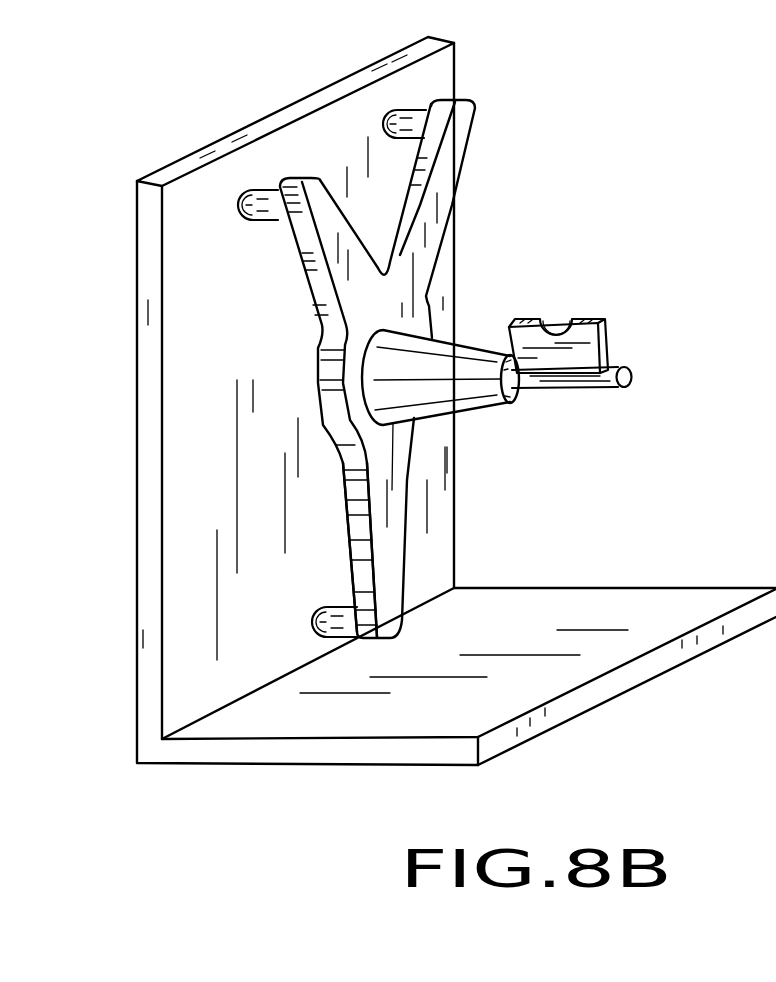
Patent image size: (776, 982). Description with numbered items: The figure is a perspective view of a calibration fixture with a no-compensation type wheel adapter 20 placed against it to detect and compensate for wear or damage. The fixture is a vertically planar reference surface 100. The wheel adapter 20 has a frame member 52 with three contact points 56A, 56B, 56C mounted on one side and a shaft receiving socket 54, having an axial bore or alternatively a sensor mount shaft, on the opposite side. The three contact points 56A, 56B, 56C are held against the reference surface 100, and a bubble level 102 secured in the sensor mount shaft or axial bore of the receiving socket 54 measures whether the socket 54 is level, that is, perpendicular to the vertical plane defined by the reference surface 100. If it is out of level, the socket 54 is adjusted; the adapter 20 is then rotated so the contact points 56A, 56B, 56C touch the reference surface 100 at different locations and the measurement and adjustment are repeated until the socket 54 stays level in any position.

The no-compensation type wheel adapter 20 is at (455, 230).
The frame member 52 is at (352, 395).
The shaft receiving socket 54 is at (481, 350).
The contact point 56A is at (408, 110).
The contact point 56B is at (262, 205).
The contact point 56C is at (313, 617).
The reference surface 100 is at (212, 232).
The bubble level 102 is at (580, 348).